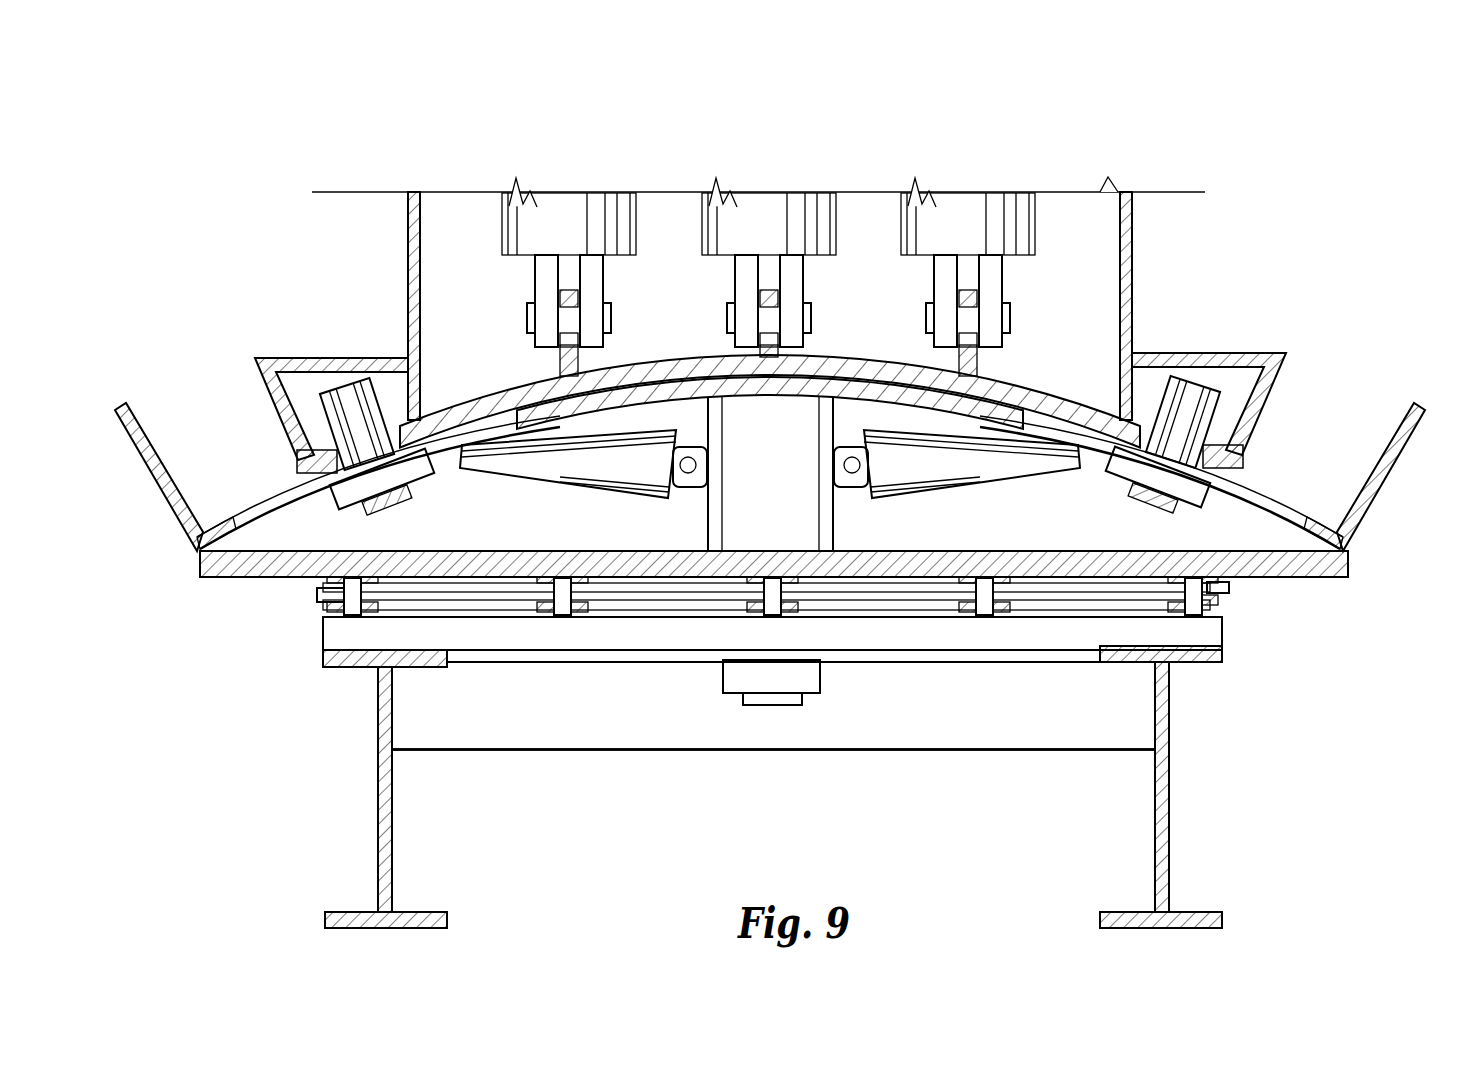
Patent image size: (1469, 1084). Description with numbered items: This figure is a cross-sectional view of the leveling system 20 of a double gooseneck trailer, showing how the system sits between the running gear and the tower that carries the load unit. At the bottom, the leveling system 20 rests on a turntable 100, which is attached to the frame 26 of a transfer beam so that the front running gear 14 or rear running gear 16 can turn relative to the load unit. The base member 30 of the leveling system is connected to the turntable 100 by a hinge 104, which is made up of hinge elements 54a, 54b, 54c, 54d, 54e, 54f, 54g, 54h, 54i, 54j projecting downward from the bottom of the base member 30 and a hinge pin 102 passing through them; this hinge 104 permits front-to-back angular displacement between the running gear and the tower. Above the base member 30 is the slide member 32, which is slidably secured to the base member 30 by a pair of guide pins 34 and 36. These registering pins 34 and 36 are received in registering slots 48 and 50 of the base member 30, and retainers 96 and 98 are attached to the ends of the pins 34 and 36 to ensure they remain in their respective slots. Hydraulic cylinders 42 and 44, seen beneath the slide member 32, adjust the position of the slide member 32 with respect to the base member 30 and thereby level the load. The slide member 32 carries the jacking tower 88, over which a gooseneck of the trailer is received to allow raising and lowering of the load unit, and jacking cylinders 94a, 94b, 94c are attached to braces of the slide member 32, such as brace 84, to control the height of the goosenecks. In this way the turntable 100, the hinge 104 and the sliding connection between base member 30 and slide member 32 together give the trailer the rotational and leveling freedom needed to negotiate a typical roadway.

The front running gear 14 is at (625, 752).
The rear running gear 16 is at (773, 706).
The leveling system 20 is at (1311, 369).
The frame 26 is at (1170, 802).
The base member 30 is at (265, 553).
The slide member 32 is at (603, 372).
The guide pin 34 is at (345, 400).
The guide pin 36 is at (1195, 395).
The hydraulic cylinder 42 is at (605, 470).
The hydraulic cylinder 44 is at (968, 473).
The registering slot 48 is at (258, 513).
The registering slot 50 is at (1272, 498).
The hinge element 54a is at (330, 609).
The hinge element 54b is at (375, 606).
The hinge element 54c is at (540, 607).
The hinge element 54d is at (585, 607).
The hinge element 54e is at (745, 607).
The hinge element 54f is at (785, 607).
The hinge element 54g is at (965, 607).
The hinge element 54h is at (1005, 607).
The hinge element 54i is at (1178, 607).
The hinge element 54j is at (1223, 608).
The brace 84 is at (787, 347).
The jacking tower 88 is at (1133, 238).
The jacking cylinder 94a is at (573, 212).
The jacking cylinder 94b is at (752, 210).
The jacking cylinder 94c is at (935, 210).
The retainer 96 is at (392, 487).
The retainer 98 is at (1158, 485).
The turntable 100 is at (1222, 638).
The hinge pin 102 is at (1236, 590).
The hinge 104 is at (845, 590).